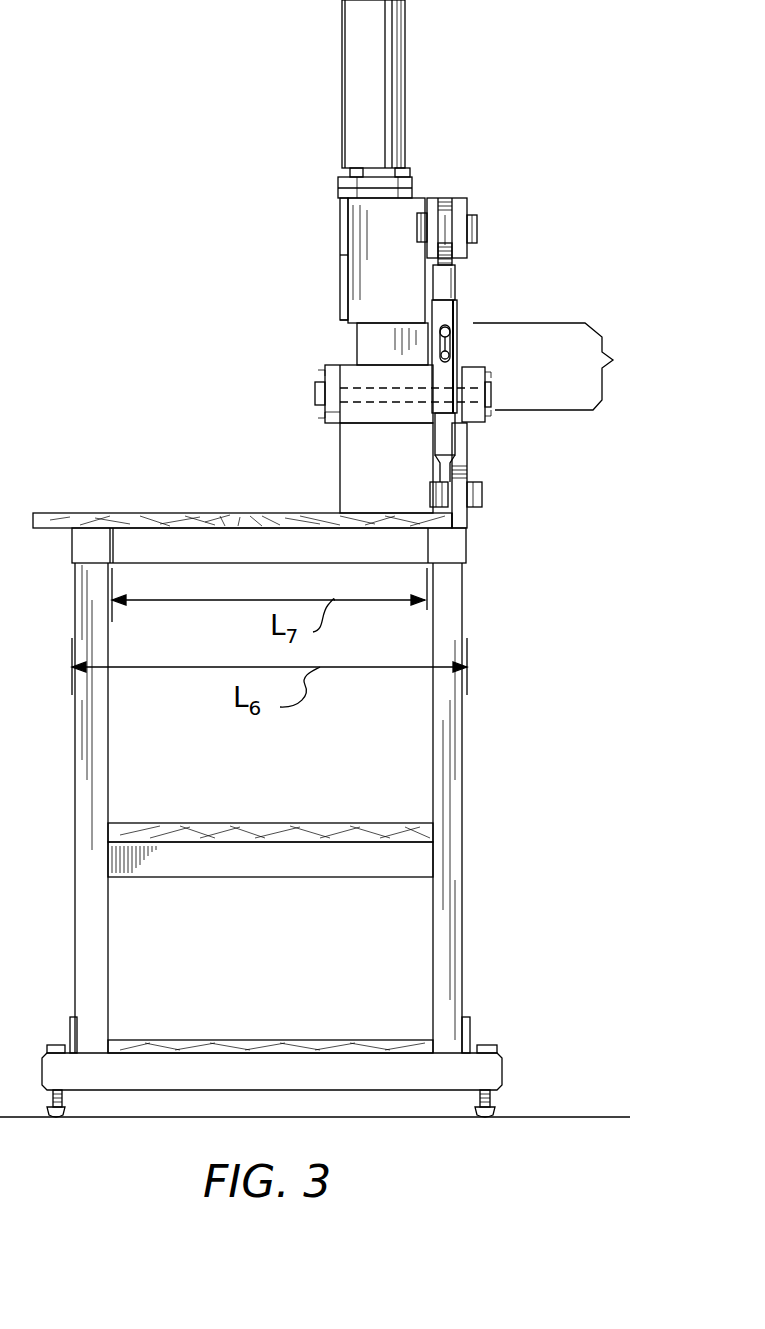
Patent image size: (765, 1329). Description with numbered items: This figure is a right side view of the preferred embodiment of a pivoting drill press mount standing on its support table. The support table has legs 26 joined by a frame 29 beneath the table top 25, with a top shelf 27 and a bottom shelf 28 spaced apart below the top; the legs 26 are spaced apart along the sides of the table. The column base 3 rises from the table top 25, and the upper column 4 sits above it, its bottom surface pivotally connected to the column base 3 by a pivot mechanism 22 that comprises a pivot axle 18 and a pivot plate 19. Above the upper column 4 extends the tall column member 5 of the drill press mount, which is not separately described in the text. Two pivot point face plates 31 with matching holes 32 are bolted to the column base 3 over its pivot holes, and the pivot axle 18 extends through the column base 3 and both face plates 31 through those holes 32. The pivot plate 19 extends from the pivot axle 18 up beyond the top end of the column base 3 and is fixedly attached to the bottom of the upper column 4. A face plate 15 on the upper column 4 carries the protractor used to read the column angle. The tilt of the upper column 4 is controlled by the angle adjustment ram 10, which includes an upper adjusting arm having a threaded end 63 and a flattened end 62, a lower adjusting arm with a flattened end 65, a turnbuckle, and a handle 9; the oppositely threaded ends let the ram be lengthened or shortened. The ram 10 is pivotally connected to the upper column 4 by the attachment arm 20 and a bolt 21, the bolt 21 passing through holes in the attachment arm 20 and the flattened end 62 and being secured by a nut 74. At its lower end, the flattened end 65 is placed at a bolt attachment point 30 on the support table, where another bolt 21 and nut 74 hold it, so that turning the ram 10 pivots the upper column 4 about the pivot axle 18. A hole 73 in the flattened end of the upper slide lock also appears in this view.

The column base 3 is at (360, 455).
The upper column 4 is at (383, 270).
The column 5 is at (408, 84).
The handle 9 is at (443, 324).
The angle adjustment ram 10 is at (460, 347).
The face plate 15 is at (340, 248).
The pivot axle 18 is at (325, 393).
The pivot plate 19 is at (357, 340).
The attachment arm 20 is at (460, 203).
The bolt 21 is at (417, 225).
The pivot mechanism 22 is at (613, 360).
The table top 25 is at (238, 513).
The legs 26 is at (95, 978).
The top shelf 27 is at (317, 823).
The bottom shelf 28 is at (332, 1040).
The frame 29 is at (158, 547).
The bolt attachment point 30 is at (470, 520).
The pivot point face plates 31 is at (325, 414).
The holes 32 is at (356, 168).
The flattened end 62 is at (446, 200).
The threaded end 63 is at (453, 262).
The flattened end 65 is at (463, 467).
The hole 73 is at (347, 327).
The nut 74 is at (482, 495).